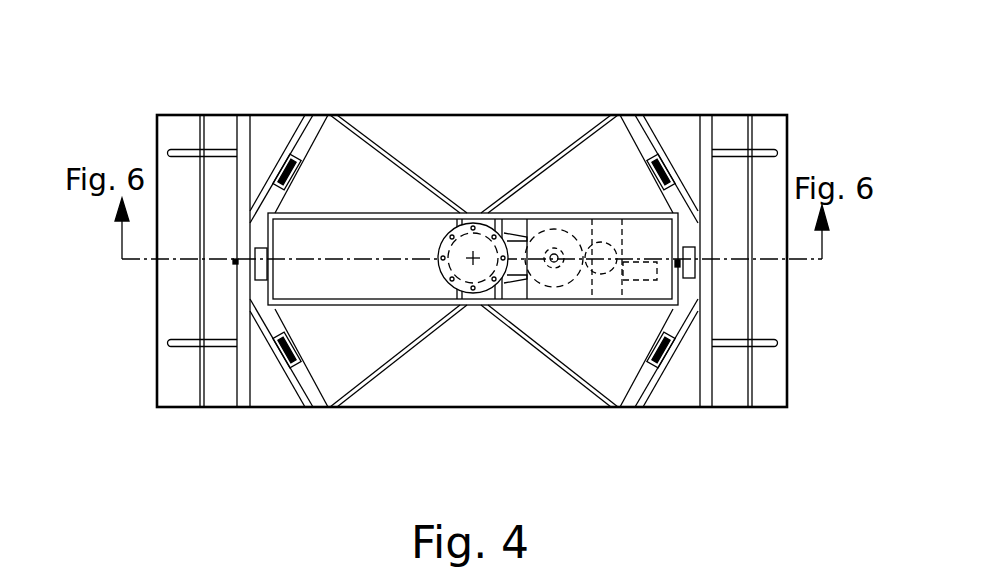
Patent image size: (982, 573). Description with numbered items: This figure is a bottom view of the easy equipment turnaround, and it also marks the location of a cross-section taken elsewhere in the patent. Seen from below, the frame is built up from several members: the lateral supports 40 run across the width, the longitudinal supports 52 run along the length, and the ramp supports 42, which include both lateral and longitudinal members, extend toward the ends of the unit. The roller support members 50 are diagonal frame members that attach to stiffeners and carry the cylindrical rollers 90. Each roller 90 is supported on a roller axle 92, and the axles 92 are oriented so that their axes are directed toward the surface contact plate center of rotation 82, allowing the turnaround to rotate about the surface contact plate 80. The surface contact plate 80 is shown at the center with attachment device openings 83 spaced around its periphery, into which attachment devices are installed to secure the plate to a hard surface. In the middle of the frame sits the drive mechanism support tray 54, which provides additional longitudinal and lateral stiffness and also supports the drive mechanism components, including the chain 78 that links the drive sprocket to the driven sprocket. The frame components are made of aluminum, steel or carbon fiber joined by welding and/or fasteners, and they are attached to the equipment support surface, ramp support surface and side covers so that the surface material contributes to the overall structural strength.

The lateral support 40 is at (242, 115).
The ramp support 42 is at (200, 115).
The roller support member 50 is at (303, 115).
The longitudinal support 52 is at (385, 220).
The drive mechanism support tray 54 is at (533, 284).
The chain 78 is at (525, 283).
The surface contact plate 80 is at (484, 231).
The surface contact plate center of rotation 82 is at (473, 258).
The attachment device opening 83 is at (554, 230).
The cylindrical roller 90 is at (290, 160).
The roller axle 92 is at (285, 168).